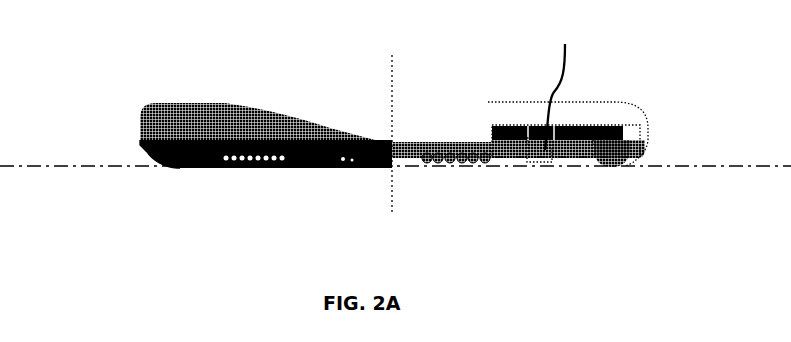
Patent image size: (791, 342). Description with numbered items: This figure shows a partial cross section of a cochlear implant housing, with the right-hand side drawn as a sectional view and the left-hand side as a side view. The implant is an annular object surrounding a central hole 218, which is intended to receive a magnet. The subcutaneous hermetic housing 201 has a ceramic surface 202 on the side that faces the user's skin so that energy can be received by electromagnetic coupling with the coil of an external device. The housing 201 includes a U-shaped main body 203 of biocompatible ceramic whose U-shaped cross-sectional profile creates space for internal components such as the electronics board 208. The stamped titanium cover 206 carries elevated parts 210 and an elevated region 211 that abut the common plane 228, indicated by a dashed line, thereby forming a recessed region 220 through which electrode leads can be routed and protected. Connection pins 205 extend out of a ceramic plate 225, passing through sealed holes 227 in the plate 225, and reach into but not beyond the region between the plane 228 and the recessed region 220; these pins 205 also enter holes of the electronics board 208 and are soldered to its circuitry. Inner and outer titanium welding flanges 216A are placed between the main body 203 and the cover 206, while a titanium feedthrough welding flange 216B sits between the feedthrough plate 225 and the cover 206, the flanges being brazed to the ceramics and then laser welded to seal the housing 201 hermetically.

The subcutaneous hermetic housing 201 is at (140, 112).
The ceramic surface 202 is at (286, 98).
The U-shaped main body 203 is at (573, 104).
The connection pins 205 is at (530, 158).
The stamped titanium cover 206 is at (628, 165).
The electronics board 208 is at (593, 155).
The elevated parts 210 is at (615, 165).
The elevated region 211 is at (188, 168).
The inner and outer titanium welding flanges 216A is at (500, 175).
The feedthrough welding flange 216B is at (572, 157).
The central hole 218 is at (402, 115).
The recessed region 220 is at (153, 164).
The plate 225 is at (562, 97).
The holes 227 is at (523, 149).
The common plane 228 is at (724, 166).